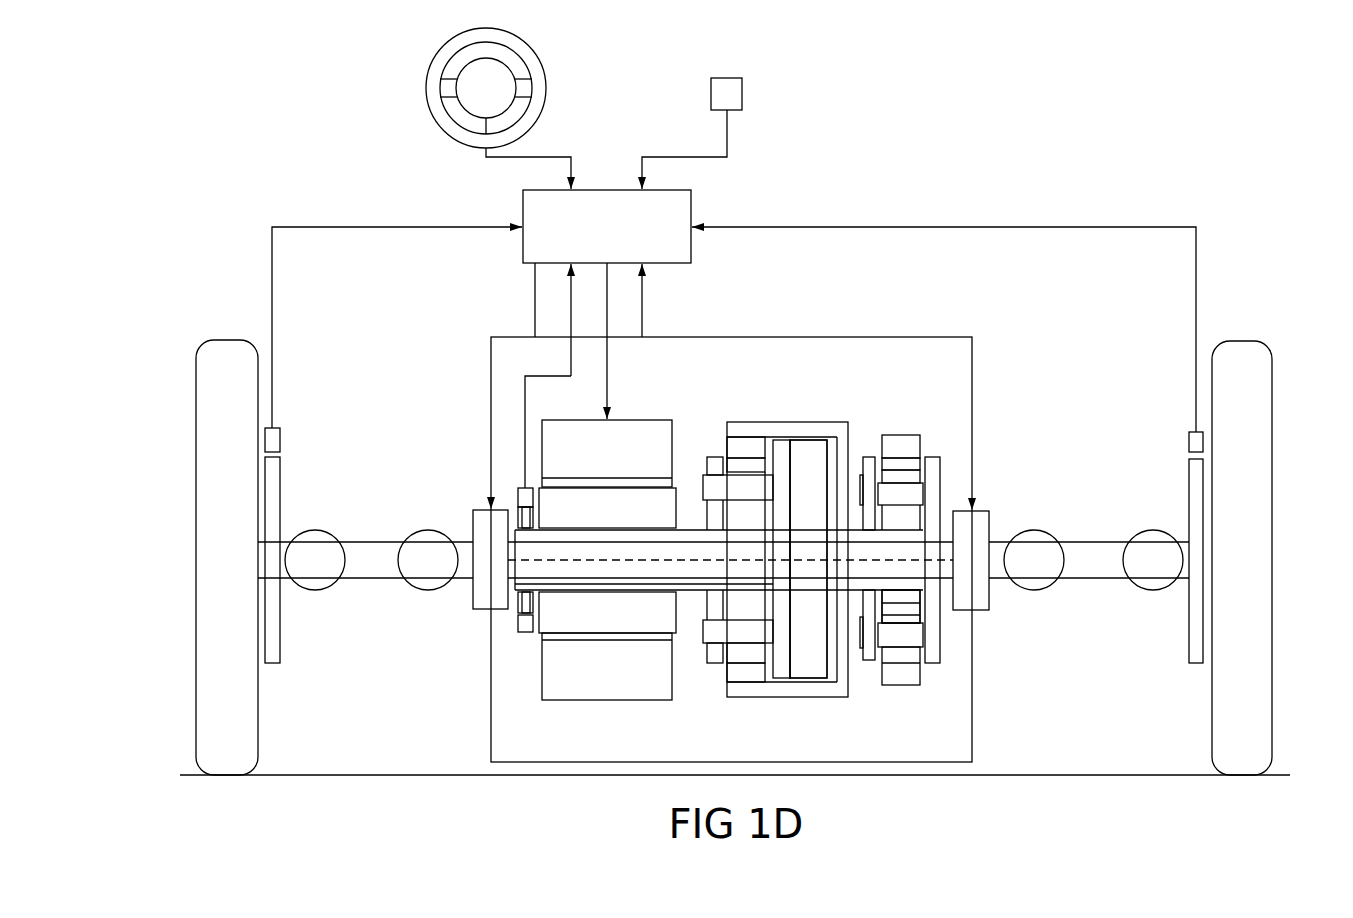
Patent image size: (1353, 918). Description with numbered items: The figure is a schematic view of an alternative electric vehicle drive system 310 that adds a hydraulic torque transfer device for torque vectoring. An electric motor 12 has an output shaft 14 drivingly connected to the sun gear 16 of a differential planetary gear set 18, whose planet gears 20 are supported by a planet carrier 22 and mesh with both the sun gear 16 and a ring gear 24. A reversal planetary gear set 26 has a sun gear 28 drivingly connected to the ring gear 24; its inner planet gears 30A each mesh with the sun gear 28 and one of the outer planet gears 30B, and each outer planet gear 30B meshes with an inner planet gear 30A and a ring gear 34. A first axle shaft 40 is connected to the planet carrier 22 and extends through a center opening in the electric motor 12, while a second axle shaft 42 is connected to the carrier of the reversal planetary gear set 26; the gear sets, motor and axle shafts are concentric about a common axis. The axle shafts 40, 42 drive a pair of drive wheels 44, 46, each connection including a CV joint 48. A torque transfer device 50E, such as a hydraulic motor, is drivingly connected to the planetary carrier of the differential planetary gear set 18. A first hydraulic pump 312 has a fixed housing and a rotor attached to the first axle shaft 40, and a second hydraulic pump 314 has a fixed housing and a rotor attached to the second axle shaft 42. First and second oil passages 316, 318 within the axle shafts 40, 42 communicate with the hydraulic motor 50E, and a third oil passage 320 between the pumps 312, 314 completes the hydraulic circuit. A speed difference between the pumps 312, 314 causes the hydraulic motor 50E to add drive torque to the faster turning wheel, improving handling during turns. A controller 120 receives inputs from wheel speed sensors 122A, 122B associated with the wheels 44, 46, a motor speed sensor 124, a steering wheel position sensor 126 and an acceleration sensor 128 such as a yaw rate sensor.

The electric motor 12 is at (606, 712).
The output shaft 14 is at (687, 528).
The sun gear 16 is at (752, 600).
The differential planetary gear set 18 is at (749, 412).
The planet gears 20 is at (740, 465).
The planet carrier 22 is at (782, 646).
The ring gear 24 is at (752, 447).
The reversal planetary gear set 26 is at (900, 424).
The sun gear 28 is at (900, 597).
The inner planet gears 30A is at (898, 477).
The outer planet gears 30B is at (903, 463).
The ring gear 34 is at (903, 445).
The first axle shaft 40 is at (466, 576).
The second axle shaft 42 is at (1000, 576).
The drive wheel 44 is at (196, 398).
The drive wheel 46 is at (1272, 395).
The CV joint 48 is at (417, 571).
The torque transfer device 50E is at (806, 444).
The controller 120 is at (592, 239).
The speed sensor 122A is at (280, 442).
The speed sensor 122B is at (1189, 443).
The motor speed sensor 124 is at (528, 490).
The steering wheel position sensor 126 is at (467, 118).
The acceleration sensor 128 is at (742, 97).
The electric vehicle drive system 310 is at (893, 188).
The first hydraulic pump 312 is at (483, 528).
The second hydraulic pump 314 is at (983, 523).
The first oil passage 316 is at (585, 560).
The second oil passage 318 is at (853, 558).
The third oil passage 320 is at (973, 686).